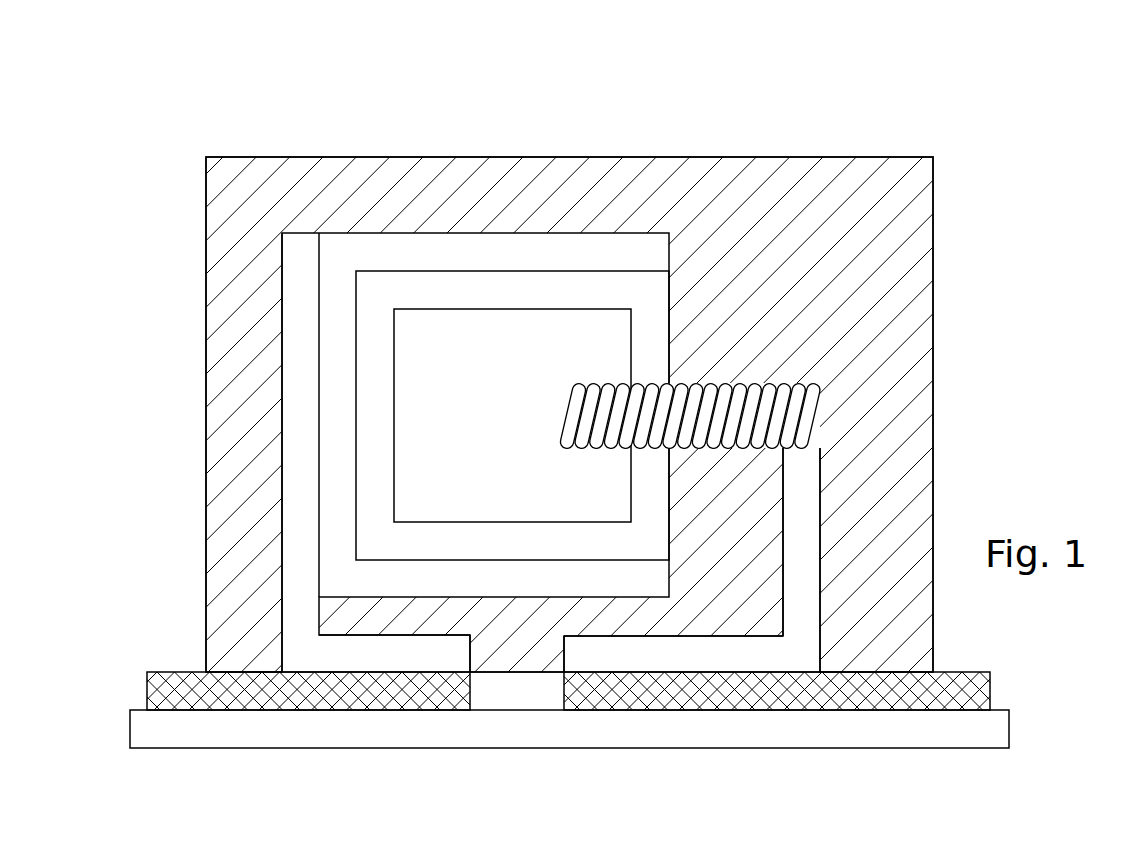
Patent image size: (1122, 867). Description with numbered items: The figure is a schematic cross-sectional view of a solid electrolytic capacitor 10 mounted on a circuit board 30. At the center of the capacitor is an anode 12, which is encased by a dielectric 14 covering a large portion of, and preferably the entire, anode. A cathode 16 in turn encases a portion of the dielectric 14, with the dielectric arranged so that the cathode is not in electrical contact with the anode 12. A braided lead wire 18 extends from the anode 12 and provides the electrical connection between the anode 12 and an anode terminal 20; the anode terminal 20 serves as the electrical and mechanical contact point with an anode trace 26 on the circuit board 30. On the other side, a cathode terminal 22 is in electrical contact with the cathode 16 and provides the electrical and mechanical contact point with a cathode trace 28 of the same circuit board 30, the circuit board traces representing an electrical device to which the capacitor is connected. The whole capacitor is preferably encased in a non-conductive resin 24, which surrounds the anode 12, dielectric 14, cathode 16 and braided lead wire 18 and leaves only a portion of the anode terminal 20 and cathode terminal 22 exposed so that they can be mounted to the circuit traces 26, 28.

The solid electrolytic capacitor 10 is at (953, 340).
The anode 12 is at (593, 345).
The dielectric 14 is at (541, 290).
The cathode 16 is at (484, 256).
The braided lead wire 18 is at (793, 422).
The anode terminal 20 is at (745, 652).
The cathode terminal 22 is at (341, 652).
The non-conductive resin 24 is at (250, 383).
The anode trace 26 is at (692, 692).
The cathode trace 28 is at (363, 698).
The circuit board 30 is at (506, 731).